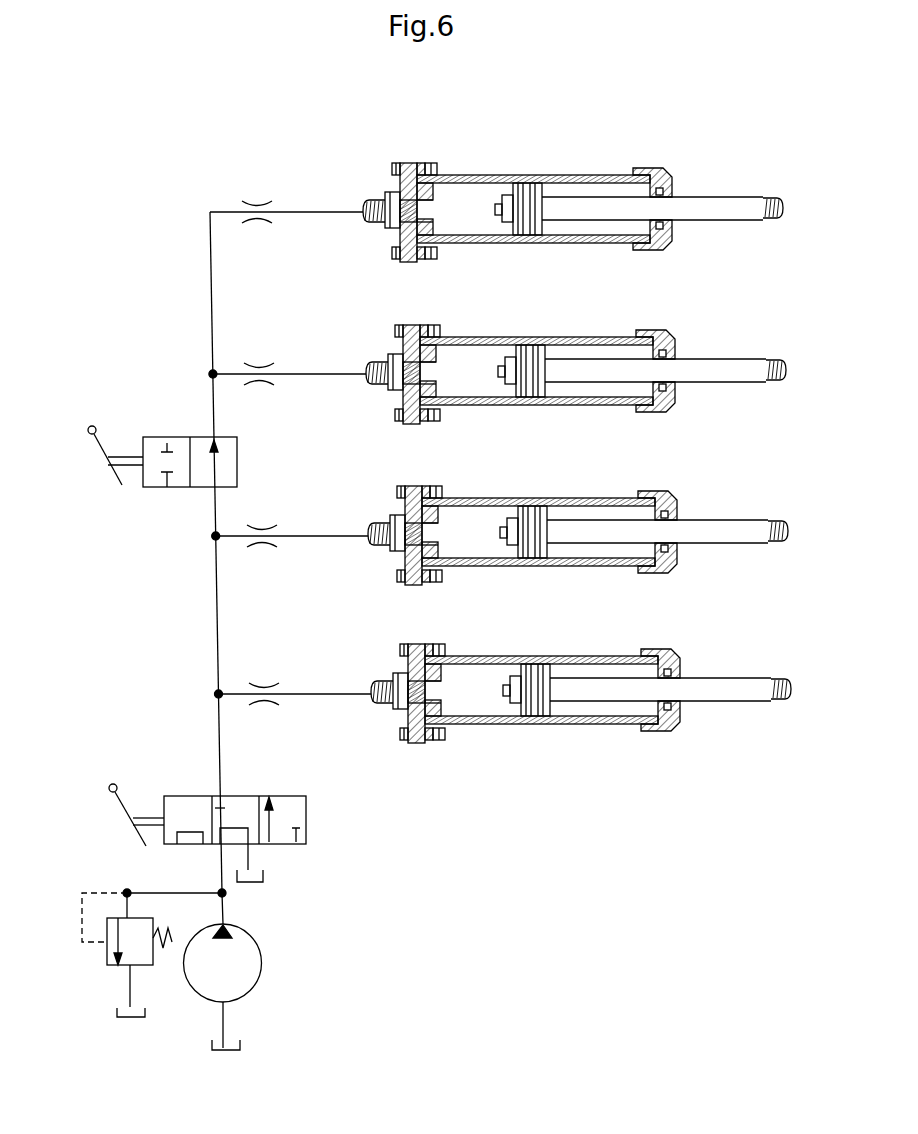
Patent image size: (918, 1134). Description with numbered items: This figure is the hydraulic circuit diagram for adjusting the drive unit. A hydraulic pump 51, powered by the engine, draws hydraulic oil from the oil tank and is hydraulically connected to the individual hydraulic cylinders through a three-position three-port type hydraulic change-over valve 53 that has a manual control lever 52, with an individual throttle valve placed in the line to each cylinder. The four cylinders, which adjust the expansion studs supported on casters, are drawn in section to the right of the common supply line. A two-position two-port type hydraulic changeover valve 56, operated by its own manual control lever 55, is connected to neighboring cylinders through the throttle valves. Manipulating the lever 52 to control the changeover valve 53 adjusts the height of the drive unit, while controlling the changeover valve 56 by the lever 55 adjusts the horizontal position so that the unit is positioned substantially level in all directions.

The hydraulic pump 51 is at (262, 967).
The manual control lever 52 is at (117, 783).
The hydraulic change-over valve 53 is at (306, 818).
The manual control lever 55 is at (93, 425).
The hydraulic changeover valve 56 is at (180, 437).